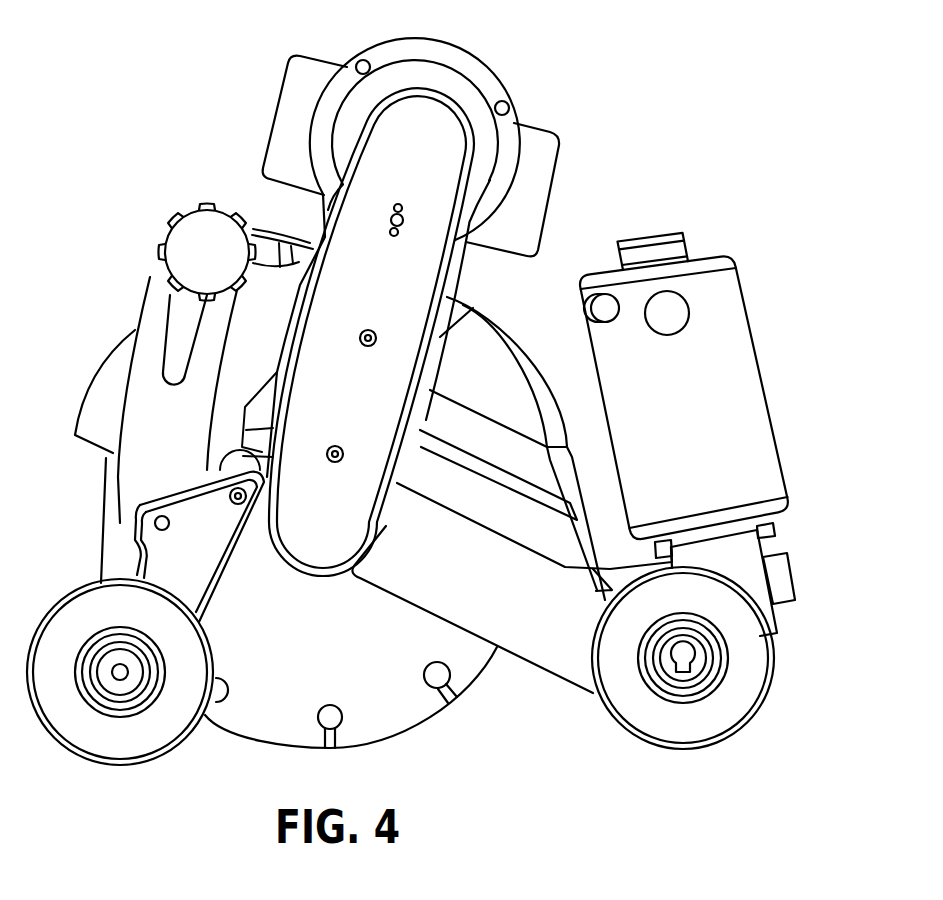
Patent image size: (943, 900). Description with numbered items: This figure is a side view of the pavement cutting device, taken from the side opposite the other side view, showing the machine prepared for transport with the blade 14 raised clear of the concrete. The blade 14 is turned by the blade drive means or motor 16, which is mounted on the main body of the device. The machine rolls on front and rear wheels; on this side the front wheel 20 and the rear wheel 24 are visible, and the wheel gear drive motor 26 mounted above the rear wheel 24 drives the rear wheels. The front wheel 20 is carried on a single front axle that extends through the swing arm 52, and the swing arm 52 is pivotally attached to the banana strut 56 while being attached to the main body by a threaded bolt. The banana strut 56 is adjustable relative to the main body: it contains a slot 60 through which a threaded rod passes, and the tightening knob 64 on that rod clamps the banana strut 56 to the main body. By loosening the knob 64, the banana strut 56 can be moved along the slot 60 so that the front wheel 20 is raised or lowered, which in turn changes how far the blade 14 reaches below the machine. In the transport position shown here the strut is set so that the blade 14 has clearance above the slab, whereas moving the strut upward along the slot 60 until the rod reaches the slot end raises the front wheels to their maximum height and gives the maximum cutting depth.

The blade 14 is at (420, 725).
The blade drive means or motor 16 is at (541, 150).
The front wheel 20 is at (187, 730).
The rear wheel 24 is at (774, 692).
The wheel gear drive motor 26 is at (767, 383).
The swing arm 52 is at (135, 550).
The banana strut 56 is at (150, 268).
The slot 60 is at (185, 333).
The knob 64 is at (182, 215).